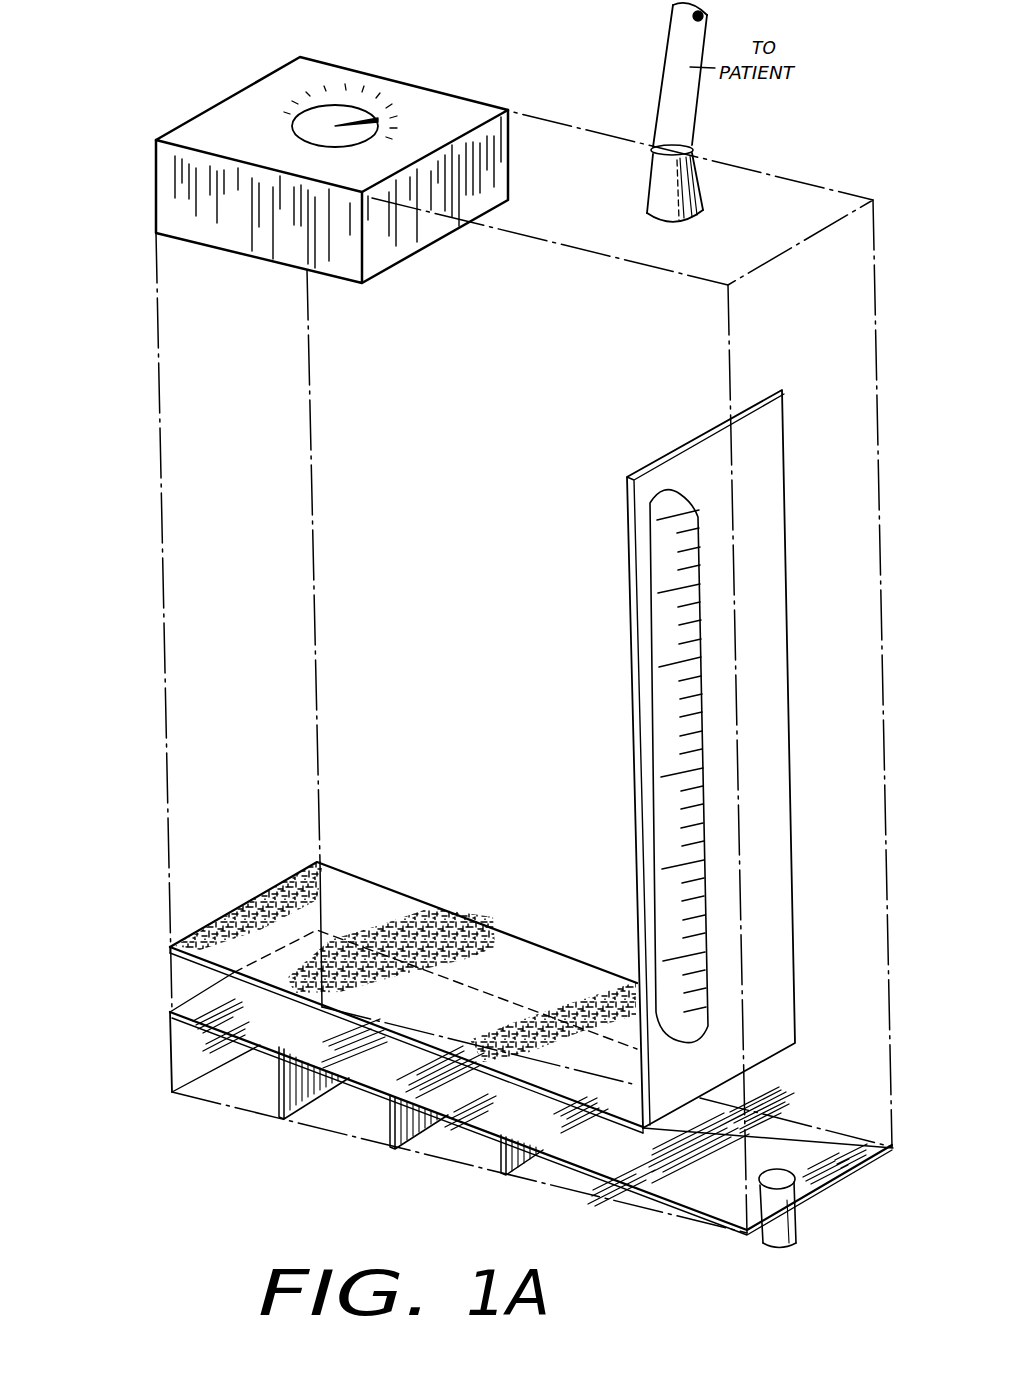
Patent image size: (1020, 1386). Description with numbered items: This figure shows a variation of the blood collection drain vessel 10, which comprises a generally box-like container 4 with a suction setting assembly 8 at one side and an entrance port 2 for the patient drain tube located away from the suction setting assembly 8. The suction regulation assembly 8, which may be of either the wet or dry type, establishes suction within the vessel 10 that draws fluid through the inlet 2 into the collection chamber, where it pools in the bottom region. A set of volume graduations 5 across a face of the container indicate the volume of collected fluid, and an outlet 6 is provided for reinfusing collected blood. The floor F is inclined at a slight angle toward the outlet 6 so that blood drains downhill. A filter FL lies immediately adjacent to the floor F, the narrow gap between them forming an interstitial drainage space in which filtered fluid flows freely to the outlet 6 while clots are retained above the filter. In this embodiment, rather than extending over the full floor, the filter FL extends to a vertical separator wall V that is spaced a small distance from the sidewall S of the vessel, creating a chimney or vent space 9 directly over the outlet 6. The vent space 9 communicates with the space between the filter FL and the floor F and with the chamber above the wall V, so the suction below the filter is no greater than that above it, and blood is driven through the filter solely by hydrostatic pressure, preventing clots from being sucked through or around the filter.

The blood collection drain vessel 10 is at (147, 675).
The container 4 is at (457, 532).
The suction setting assembly 8 is at (268, 93).
The entrance port 2 is at (655, 190).
The vent space 9 is at (688, 753).
The volume graduations 5 is at (645, 766).
The vertical separator wall V is at (632, 738).
The sidewall S is at (852, 580).
The filter FL is at (367, 897).
The floor F is at (210, 998).
The outlet 6 is at (780, 1176).